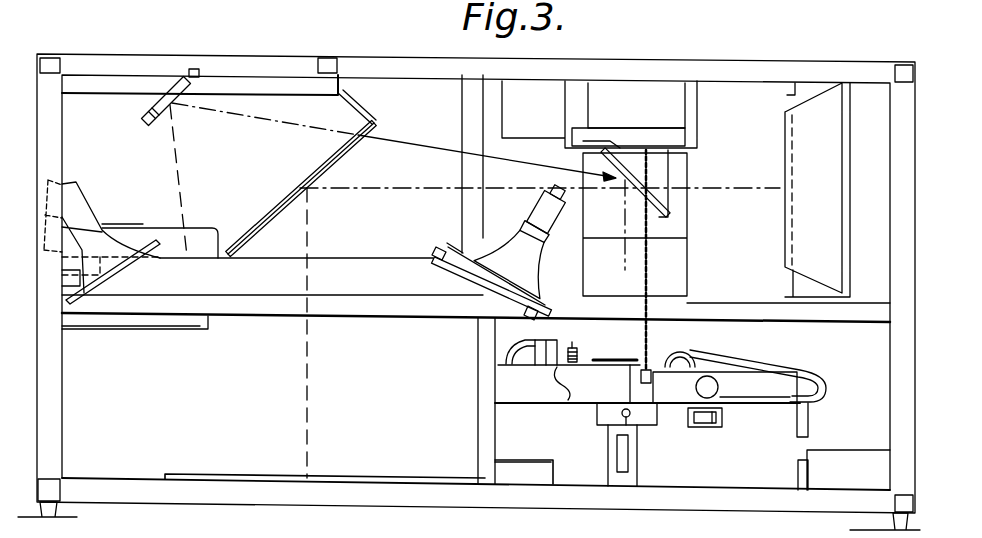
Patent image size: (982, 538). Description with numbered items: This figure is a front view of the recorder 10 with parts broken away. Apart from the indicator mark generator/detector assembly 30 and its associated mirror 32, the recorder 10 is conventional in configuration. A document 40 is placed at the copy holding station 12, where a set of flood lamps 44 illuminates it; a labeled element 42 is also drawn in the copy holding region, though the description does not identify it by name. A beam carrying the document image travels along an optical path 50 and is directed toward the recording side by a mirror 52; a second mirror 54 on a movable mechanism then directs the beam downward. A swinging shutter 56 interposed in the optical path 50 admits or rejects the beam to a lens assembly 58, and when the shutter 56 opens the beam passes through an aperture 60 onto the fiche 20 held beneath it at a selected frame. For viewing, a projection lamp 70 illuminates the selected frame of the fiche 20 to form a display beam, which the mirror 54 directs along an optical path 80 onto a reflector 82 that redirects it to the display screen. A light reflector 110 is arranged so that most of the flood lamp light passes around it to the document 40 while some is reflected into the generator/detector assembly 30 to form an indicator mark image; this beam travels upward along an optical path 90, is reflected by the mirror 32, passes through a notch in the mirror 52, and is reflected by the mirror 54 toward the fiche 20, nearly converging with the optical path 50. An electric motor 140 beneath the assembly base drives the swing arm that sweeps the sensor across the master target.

The recorder 10 is at (372, 507).
The copy holding station 12 is at (394, 405).
The fiche 20 is at (650, 402).
The indicator mark generator/detector assembly 30 is at (204, 224).
The mirror 32 is at (150, 108).
The document 40 is at (209, 475).
The floor 42 is at (120, 477).
The flood lamps 44 is at (88, 220).
The optical path 50 is at (303, 364).
The mirror 52 is at (343, 148).
The second mirror 54 is at (668, 220).
The swinging shutter 56 is at (615, 358).
The lens assembly 58 is at (628, 400).
The aperture 60 is at (620, 412).
The projection lamp 70 is at (637, 422).
The optical path 80 is at (736, 190).
The reflector 82 is at (830, 182).
The optical path 90 is at (175, 150).
The light reflector 110 is at (178, 332).
The electric motor 140 is at (68, 270).